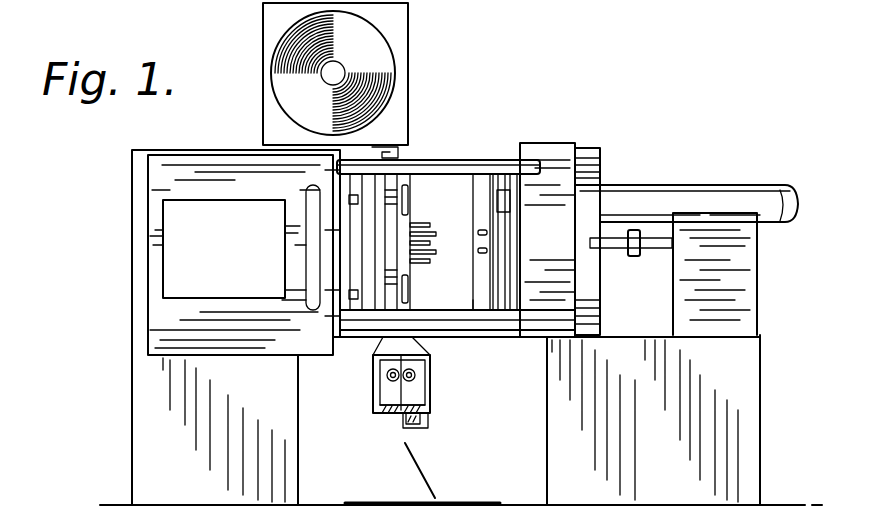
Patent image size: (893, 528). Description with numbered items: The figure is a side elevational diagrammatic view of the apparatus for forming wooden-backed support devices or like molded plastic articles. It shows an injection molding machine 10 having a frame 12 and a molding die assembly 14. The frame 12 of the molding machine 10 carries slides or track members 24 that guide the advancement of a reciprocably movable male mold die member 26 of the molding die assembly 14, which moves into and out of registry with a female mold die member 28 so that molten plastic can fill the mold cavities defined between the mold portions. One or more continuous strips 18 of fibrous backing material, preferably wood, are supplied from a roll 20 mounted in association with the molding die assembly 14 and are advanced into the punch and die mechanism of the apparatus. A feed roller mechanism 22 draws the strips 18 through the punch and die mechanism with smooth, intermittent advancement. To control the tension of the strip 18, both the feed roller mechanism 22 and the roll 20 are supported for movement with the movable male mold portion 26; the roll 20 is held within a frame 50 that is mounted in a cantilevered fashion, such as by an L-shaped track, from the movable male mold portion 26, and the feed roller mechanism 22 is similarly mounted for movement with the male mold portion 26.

The injection molding machine 10 is at (103, 176).
The frame 12 is at (226, 148).
The molding die assembly 14 is at (451, 190).
The continuous strip of fibrous backing material 18 is at (400, 128).
The roll 20 is at (380, 40).
The feed roller mechanism 22 is at (374, 427).
The slides or track members 24 is at (500, 158).
The male mold die member 26 is at (412, 277).
The female mold die member 28 is at (490, 292).
The frame 50 is at (277, 27).